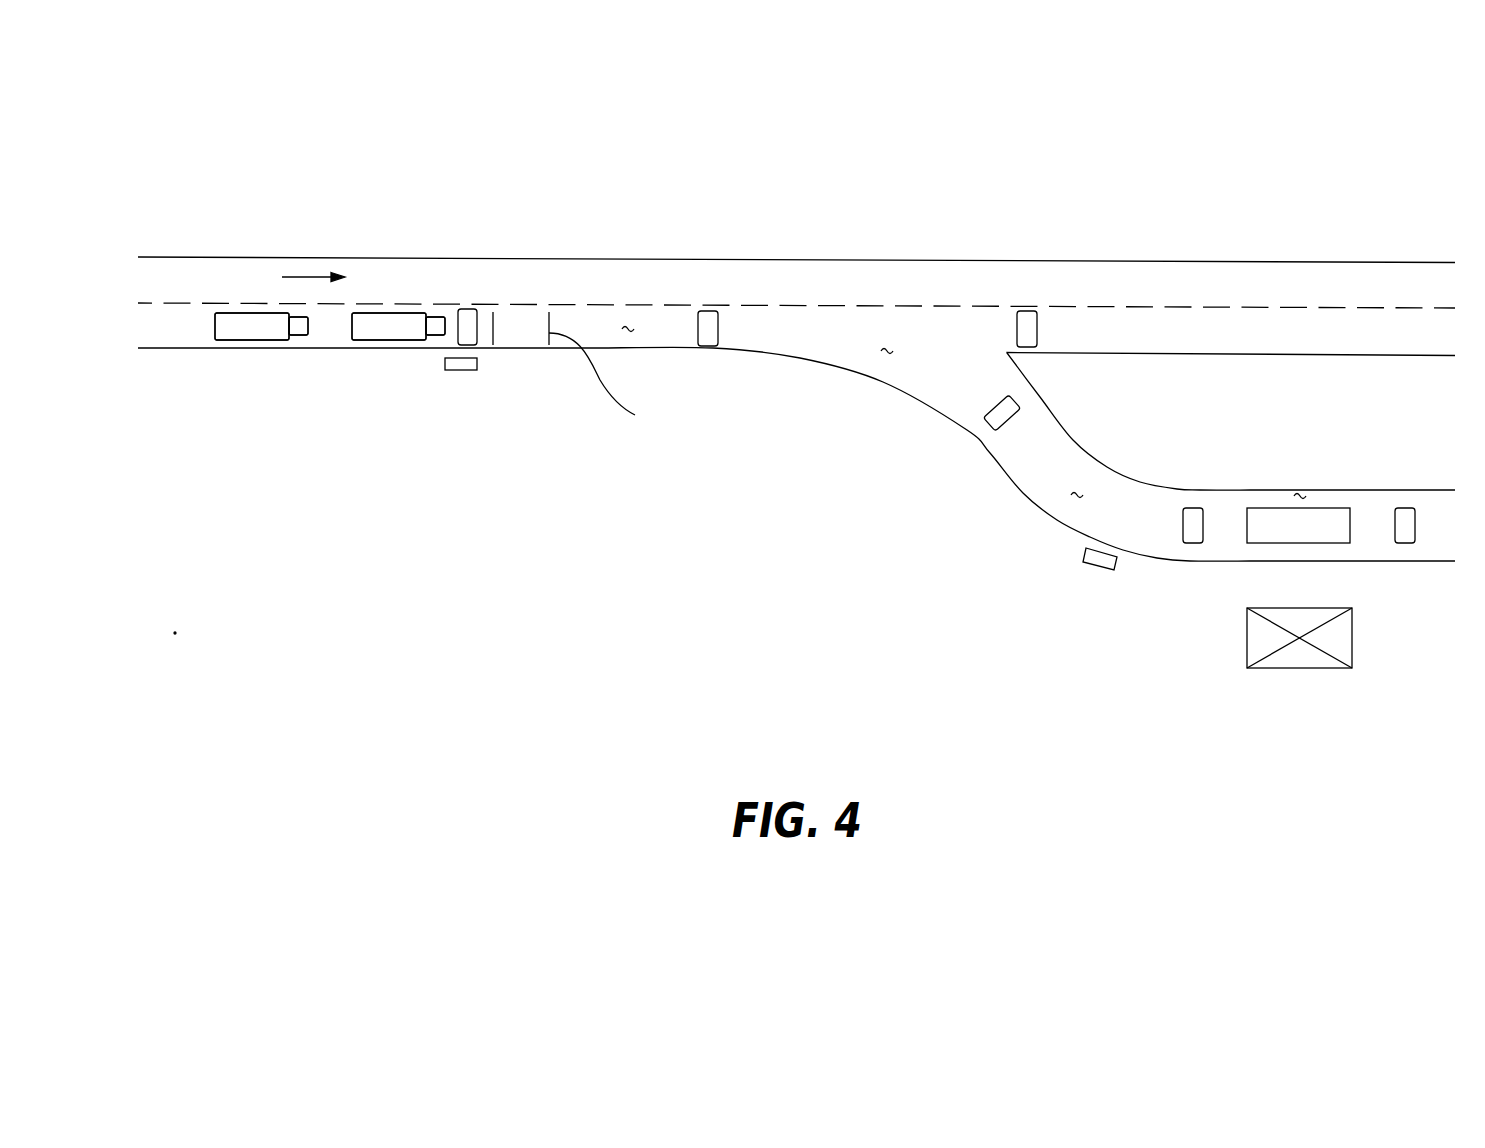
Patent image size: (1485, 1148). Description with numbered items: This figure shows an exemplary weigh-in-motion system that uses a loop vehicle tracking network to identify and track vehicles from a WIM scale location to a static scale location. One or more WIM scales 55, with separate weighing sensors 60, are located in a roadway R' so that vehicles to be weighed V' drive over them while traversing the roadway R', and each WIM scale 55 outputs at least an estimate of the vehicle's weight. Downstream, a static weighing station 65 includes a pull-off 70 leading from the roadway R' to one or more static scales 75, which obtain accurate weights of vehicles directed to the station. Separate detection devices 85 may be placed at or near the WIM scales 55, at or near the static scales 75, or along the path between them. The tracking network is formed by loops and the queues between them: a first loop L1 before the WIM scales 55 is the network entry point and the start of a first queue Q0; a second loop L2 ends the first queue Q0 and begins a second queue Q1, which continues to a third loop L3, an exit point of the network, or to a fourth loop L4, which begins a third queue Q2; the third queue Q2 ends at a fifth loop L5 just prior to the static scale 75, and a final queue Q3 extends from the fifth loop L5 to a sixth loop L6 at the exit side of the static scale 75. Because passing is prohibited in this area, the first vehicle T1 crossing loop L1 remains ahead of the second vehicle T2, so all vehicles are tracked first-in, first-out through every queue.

The roadway R' is at (796, 401).
The vehicle to be weighed V' is at (330, 379).
The second vehicle T2 is at (242, 318).
The first vehicle T1 is at (385, 318).
The first loop L1 is at (463, 307).
The second loop L2 is at (710, 347).
The third loop L3 is at (1037, 333).
The fourth loop L4 is at (985, 421).
The fifth loop L5 is at (1192, 545).
The sixth loop L6 is at (1408, 545).
The first queue Q0 is at (629, 328).
The second queue Q1 is at (887, 352).
The third queue Q2 is at (1074, 497).
The final queue Q3 is at (1300, 496).
The WIM scale 55 is at (527, 361).
The weighing sensor 60 is at (609, 388).
The static weighing station 65 is at (1300, 662).
The pull-off 70 is at (1010, 464).
The static scale 75 is at (1333, 517).
The detection device 85 is at (460, 369).